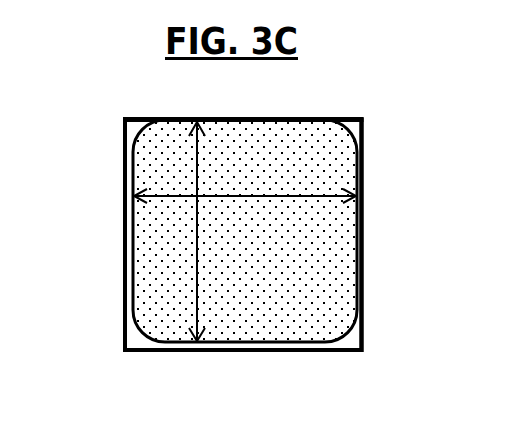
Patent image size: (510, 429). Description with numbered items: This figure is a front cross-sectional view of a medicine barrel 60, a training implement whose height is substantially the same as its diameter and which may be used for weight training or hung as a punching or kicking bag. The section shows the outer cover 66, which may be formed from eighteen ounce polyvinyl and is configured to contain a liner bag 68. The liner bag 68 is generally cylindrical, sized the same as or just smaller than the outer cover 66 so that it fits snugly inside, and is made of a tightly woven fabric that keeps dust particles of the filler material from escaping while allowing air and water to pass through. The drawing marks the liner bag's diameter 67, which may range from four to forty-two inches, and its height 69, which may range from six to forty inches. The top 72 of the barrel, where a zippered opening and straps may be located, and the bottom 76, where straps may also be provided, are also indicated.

The medicine barrel 60 is at (124, 128).
The top 72 is at (325, 118).
The bottom 76 is at (350, 352).
The outer cover 66 is at (124, 228).
The liner bag 68 is at (132, 268).
The diameter 67 is at (292, 198).
The height 69 is at (197, 232).